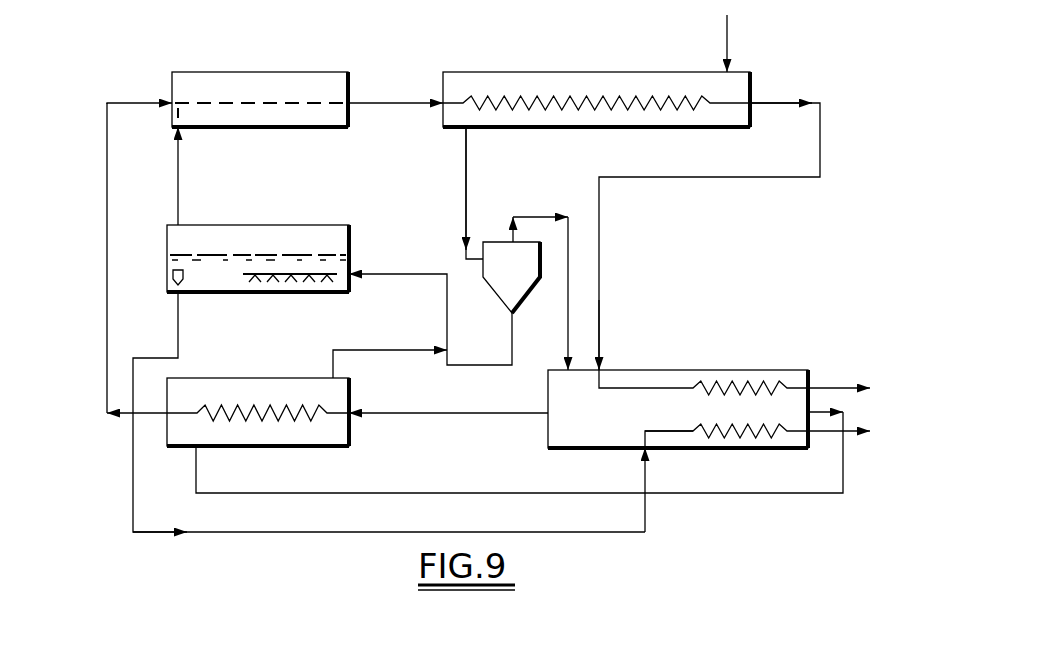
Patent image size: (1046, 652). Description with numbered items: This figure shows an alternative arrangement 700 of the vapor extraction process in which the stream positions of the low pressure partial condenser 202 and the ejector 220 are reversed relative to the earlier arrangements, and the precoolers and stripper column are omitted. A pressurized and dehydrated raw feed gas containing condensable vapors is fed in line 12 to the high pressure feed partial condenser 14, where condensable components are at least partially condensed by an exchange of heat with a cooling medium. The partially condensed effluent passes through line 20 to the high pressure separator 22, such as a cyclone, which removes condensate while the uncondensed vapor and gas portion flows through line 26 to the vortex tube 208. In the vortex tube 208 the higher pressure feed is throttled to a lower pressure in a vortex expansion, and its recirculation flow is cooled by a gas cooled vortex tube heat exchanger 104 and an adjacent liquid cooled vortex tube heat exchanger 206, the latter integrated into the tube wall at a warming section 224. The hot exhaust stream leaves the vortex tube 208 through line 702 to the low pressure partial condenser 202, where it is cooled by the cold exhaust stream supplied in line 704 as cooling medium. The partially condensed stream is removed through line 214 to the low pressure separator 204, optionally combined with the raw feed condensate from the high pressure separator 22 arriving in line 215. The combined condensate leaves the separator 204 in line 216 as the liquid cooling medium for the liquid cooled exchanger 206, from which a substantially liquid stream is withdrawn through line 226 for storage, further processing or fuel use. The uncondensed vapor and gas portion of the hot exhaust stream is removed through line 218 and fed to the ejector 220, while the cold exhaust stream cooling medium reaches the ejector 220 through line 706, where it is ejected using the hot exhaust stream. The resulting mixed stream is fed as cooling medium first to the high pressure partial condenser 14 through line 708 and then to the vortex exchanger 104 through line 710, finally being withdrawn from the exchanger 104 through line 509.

The alternative arrangement 700 is at (197, 550).
The line 12 is at (725, 43).
The high pressure feed partial condenser 14 is at (522, 72).
The line 20 is at (466, 210).
The high pressure separator 22 is at (540, 280).
The line 26 is at (568, 305).
The gas cooled vortex tube heat exchanger 104 is at (715, 380).
The low pressure partial condenser 202 is at (205, 378).
The low pressure separator 204 is at (265, 225).
The liquid cooled vortex tube heat exchanger 206 is at (753, 432).
The vortex tube 208 is at (578, 452).
The line 214 is at (365, 350).
The line 215 is at (512, 340).
The line 216 is at (133, 472).
The line 218 is at (178, 177).
The ejector 220 is at (227, 72).
The warming section 224 is at (740, 408).
The line 226 is at (827, 433).
The line 509 is at (837, 385).
The line 702 is at (668, 493).
The line 704 is at (493, 415).
The line 706 is at (107, 135).
The line 708 is at (408, 105).
The line 710 is at (599, 265).